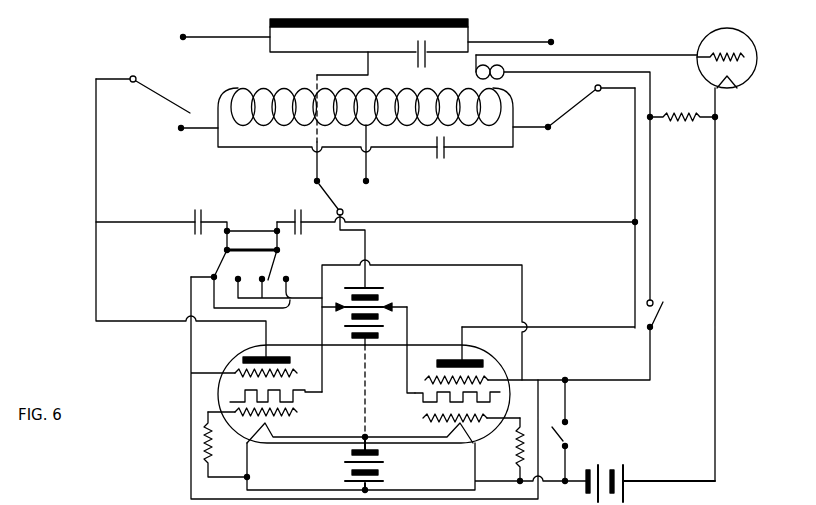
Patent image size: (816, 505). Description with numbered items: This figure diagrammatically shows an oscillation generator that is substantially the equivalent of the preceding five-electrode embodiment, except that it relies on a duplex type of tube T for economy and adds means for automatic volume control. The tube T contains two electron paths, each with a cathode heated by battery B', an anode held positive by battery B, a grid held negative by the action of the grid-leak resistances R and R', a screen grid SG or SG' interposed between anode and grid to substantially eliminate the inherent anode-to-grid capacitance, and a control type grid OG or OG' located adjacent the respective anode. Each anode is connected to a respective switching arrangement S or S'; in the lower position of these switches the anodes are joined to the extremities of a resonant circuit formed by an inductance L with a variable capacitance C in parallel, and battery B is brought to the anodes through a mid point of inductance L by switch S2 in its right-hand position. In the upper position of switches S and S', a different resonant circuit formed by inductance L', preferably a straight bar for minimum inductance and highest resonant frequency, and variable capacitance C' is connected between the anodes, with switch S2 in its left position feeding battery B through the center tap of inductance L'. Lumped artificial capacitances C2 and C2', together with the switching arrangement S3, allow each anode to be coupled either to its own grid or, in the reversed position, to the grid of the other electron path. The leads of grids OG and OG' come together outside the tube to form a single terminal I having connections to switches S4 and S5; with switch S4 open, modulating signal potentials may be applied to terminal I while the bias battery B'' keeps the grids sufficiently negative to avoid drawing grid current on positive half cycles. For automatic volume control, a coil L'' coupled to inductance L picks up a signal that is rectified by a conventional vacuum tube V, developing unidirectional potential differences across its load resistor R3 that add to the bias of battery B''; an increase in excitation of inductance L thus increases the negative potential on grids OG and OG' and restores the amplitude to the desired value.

The inductance L' is at (369, 26).
The variable capacitance C' is at (435, 59).
The coil L'' is at (501, 67).
The vacuum tube V is at (700, 43).
The switching arrangement S' is at (143, 85).
The inductance L is at (352, 116).
The switching arrangement S is at (574, 108).
The load resistor R3 is at (665, 121).
The variable capacitance C is at (451, 156).
The switch S2 is at (323, 186).
The lumped capacitance C2' is at (182, 209).
The lumped capacitance C2 is at (291, 209).
The switching arrangement S3 is at (263, 250).
The battery B is at (364, 316).
The thermionic tube T is at (424, 346).
The control grid OG' is at (247, 356).
The screen grid SG' is at (256, 398).
The grid-leak resistance R' is at (225, 444).
The battery B' is at (377, 465).
The control grid OG is at (467, 355).
The screen grid SG is at (438, 407).
The grid-leak resistance R is at (505, 451).
The terminal I is at (564, 390).
The switch S4 is at (568, 440).
The switch S5 is at (661, 322).
The bias battery B'' is at (644, 476).